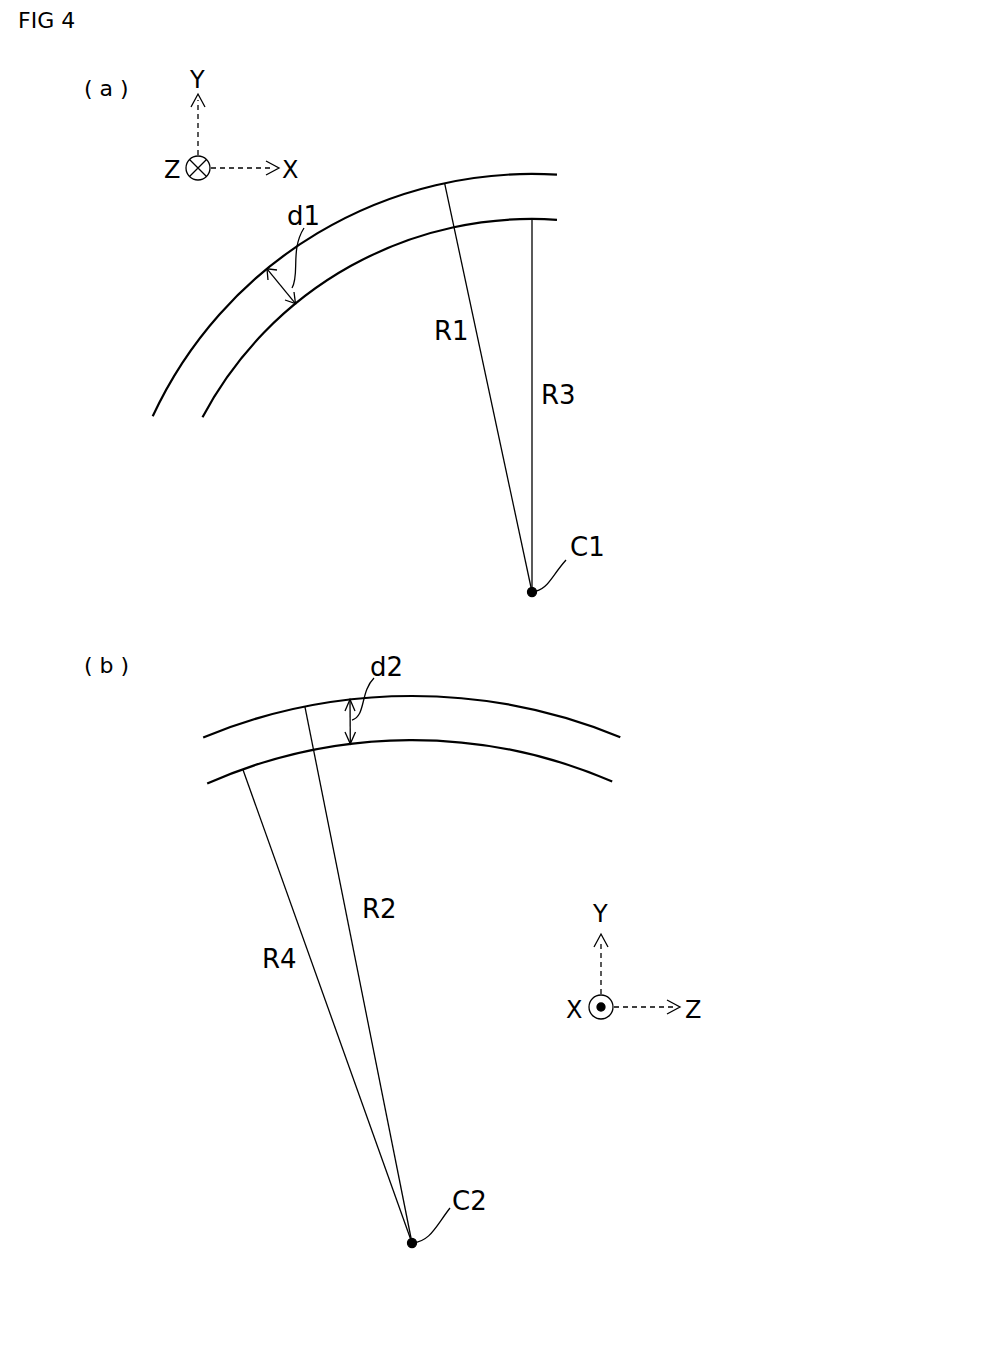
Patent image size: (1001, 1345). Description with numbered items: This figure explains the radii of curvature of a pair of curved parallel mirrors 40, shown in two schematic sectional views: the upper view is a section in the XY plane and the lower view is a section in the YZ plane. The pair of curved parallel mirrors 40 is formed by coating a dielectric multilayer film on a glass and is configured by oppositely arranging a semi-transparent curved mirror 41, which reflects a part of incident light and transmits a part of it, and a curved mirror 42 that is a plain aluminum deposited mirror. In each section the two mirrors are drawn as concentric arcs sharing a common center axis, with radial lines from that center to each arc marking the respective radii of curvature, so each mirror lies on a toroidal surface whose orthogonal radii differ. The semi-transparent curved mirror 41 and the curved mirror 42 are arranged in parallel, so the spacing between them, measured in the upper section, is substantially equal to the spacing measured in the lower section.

The pair of curved parallel mirrors 40 is at (453, 453).
The semi-transparent curved mirror 41 is at (557, 175).
The curved mirror 42 is at (446, 477).